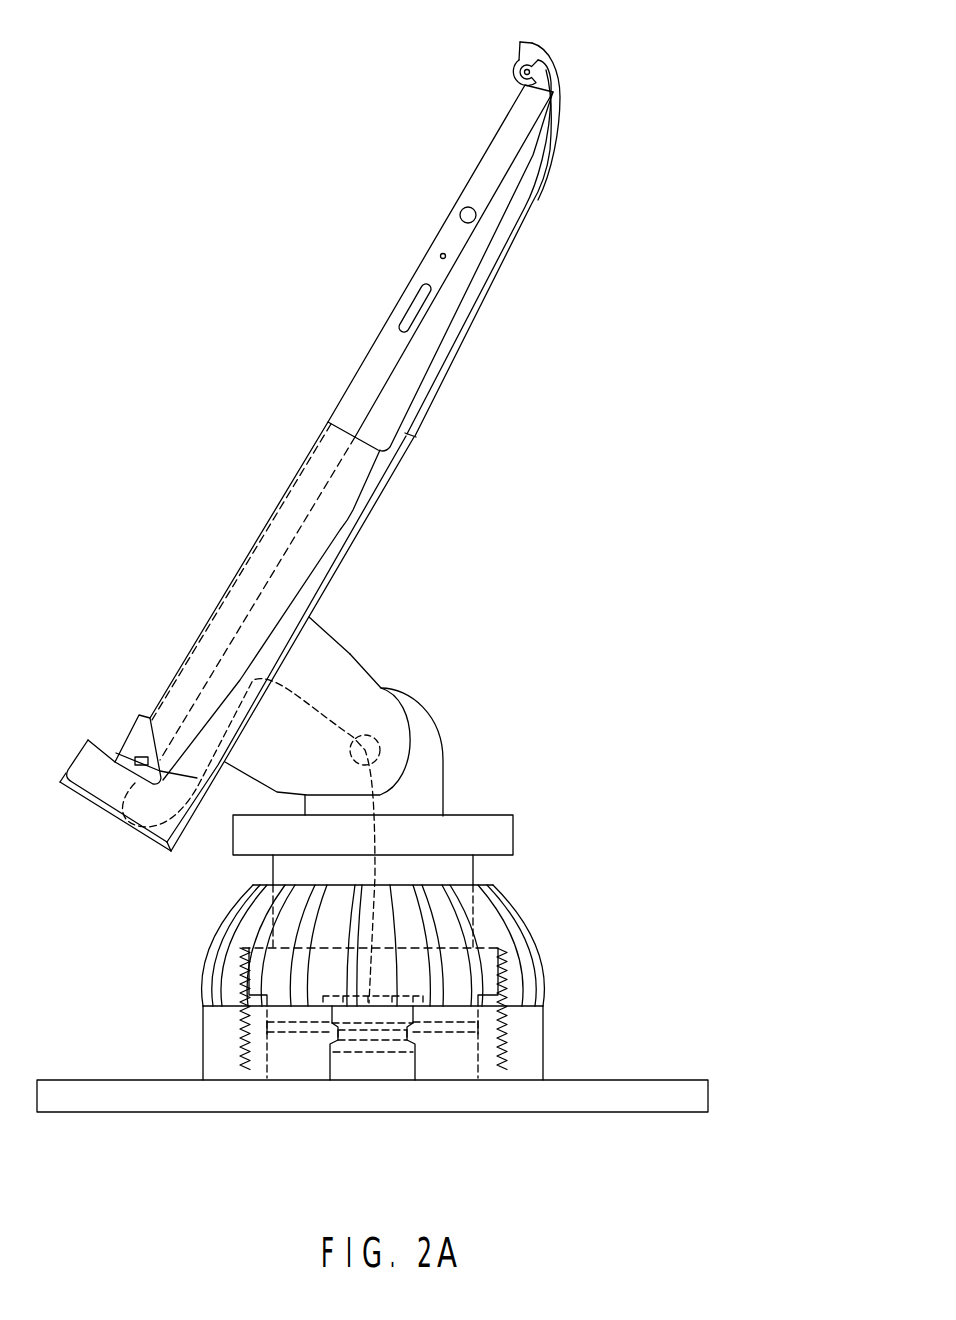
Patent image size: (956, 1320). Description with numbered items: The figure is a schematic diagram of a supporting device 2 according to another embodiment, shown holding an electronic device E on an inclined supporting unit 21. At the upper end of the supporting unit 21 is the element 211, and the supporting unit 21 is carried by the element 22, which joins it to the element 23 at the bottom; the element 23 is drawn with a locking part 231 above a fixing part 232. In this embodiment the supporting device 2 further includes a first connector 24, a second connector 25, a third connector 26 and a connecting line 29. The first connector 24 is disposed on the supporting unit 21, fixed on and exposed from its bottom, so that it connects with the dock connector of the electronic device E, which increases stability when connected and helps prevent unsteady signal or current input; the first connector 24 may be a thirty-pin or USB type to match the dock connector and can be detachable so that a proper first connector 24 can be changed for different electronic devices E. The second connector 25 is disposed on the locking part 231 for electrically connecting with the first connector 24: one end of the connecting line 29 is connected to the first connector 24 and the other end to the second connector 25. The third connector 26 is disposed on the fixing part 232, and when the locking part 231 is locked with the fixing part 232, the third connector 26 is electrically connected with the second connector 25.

The supporting device 2 is at (171, 99).
The electronic device E is at (367, 375).
The supporting unit 21 is at (531, 206).
The hook 211 is at (514, 70).
The pivot bracket 22 is at (447, 710).
The base 23 is at (632, 910).
The locking part 231 is at (516, 965).
The fixing part 232 is at (547, 1090).
The first connector 24 is at (130, 750).
The second connector 25 is at (415, 1040).
The third connector 26 is at (381, 1048).
The connecting line 29 is at (343, 657).